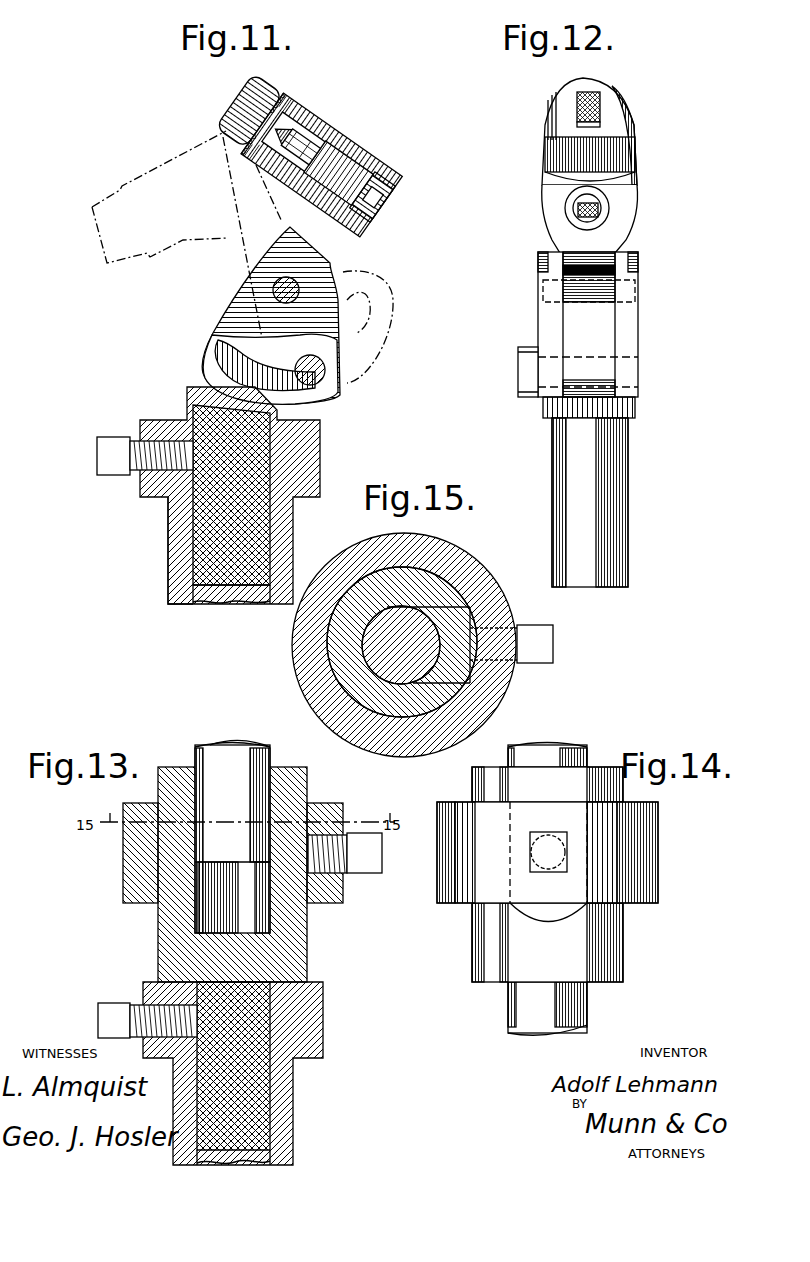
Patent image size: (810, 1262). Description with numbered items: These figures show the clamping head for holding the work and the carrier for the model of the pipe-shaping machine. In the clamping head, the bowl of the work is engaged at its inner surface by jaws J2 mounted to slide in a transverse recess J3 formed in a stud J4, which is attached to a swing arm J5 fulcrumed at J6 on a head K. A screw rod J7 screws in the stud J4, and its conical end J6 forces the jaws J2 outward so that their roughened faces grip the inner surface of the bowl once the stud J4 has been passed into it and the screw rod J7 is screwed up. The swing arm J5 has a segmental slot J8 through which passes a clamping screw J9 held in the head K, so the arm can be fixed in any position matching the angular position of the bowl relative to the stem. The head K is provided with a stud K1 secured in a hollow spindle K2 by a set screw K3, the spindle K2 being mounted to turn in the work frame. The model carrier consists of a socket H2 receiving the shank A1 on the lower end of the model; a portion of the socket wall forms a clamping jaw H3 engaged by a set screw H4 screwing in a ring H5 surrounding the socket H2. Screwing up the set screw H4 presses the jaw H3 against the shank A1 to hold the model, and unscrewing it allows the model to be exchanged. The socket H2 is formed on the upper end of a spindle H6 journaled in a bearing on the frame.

In FIG. 12, the jaws J2 is at (577, 105).
In FIG. 12, the transverse recess J3 is at (578, 124).
In FIG. 12, the stud J4 is at (630, 128).
In FIG. 11, the swing arm J5 is at (262, 262).
In FIG. 12, the swing arm J5 is at (605, 337).
In FIG. 12, the fulcrum / conical end J6 is at (543, 286).
In FIG. 12, the screw rod J7 is at (600, 212).
In FIG. 11, the segmental slot J8 is at (222, 342).
In FIG. 11, the clamping screw J9 is at (322, 388).
In FIG. 12, the clamping screw J9 is at (518, 376).
In FIG. 11, the head K is at (200, 382).
In FIG. 11, the stud K1 is at (205, 502).
In FIG. 12, the stud K1 is at (626, 512).
In FIG. 11, the hollow spindle K2 is at (175, 564).
In FIG. 11, the set screw K3 is at (97, 452).
In FIG. 15, the socket H2 is at (455, 572).
In FIG. 13, the socket H2 is at (165, 926).
In FIG. 14, the socket H2 is at (490, 952).
In FIG. 15, the clamping jaw H3 is at (455, 672).
In FIG. 13, the clamping jaw H3 is at (292, 772).
In FIG. 15, the set screw H4 is at (553, 640).
In FIG. 13, the set screw H4 is at (365, 865).
In FIG. 14, the set screw H4 is at (546, 840).
In FIG. 15, the ring H5 is at (300, 636).
In FIG. 13, the ring H5 is at (343, 820).
In FIG. 14, the ring H5 is at (648, 862).
In FIG. 13, the spindle H6 is at (257, 1105).
In FIG. 15, the shank A1 is at (385, 655).
In FIG. 13, the shank A1 is at (225, 752).
In FIG. 14, the shank A1 is at (542, 752).